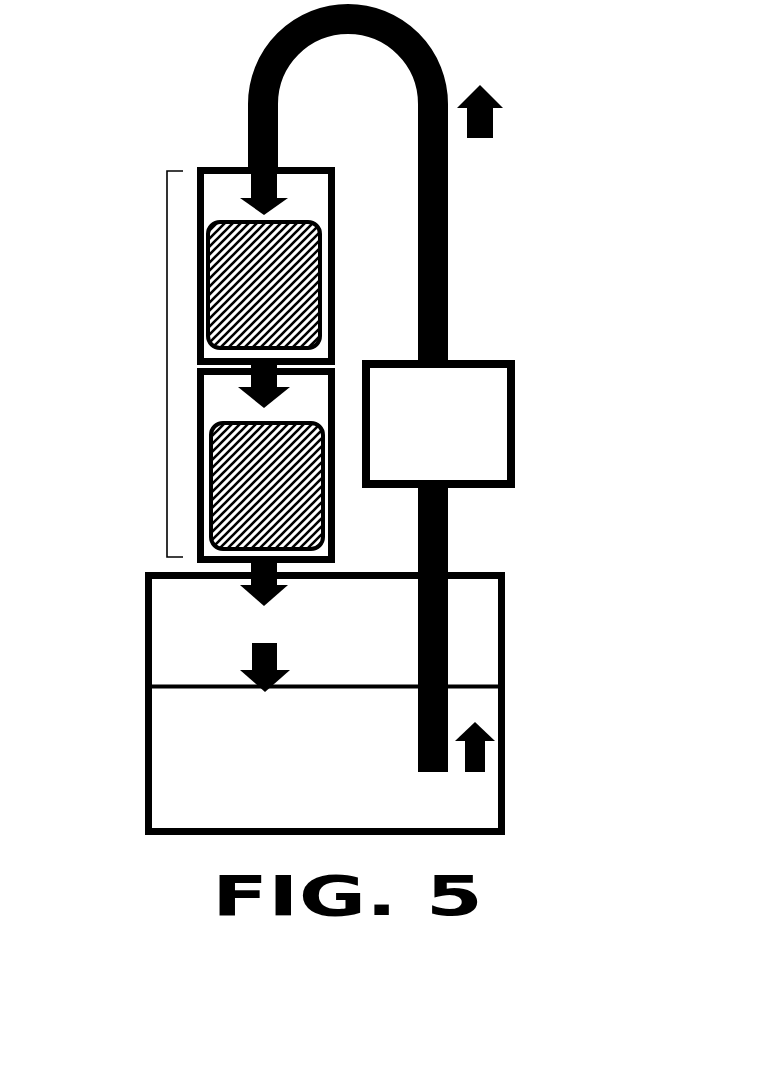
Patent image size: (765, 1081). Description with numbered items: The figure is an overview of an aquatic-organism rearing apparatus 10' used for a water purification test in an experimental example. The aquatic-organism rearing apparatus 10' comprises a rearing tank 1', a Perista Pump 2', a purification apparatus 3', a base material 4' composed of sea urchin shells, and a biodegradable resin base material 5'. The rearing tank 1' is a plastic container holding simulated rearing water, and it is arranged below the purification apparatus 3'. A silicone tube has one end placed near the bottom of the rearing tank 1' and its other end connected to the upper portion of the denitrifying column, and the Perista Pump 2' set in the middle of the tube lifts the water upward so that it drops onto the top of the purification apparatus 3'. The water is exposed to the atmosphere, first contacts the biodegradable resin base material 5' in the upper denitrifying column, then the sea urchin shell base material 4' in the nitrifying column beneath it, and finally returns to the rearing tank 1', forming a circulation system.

The aquatic-organism rearing apparatus 10' is at (280, 395).
The rearing tank 1' is at (390, 695).
The Perista Pump 2' is at (503, 424).
The purification apparatus 3' is at (196, 364).
The base material composed of sea urchin shells 4' is at (192, 466).
The biodegradable resin base material 5' is at (192, 266).